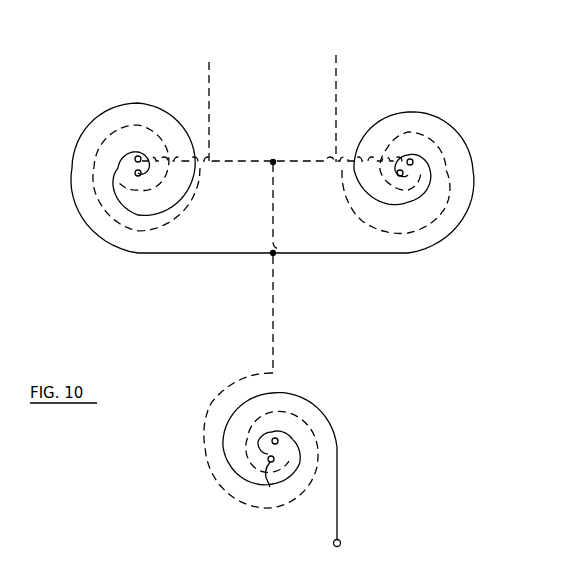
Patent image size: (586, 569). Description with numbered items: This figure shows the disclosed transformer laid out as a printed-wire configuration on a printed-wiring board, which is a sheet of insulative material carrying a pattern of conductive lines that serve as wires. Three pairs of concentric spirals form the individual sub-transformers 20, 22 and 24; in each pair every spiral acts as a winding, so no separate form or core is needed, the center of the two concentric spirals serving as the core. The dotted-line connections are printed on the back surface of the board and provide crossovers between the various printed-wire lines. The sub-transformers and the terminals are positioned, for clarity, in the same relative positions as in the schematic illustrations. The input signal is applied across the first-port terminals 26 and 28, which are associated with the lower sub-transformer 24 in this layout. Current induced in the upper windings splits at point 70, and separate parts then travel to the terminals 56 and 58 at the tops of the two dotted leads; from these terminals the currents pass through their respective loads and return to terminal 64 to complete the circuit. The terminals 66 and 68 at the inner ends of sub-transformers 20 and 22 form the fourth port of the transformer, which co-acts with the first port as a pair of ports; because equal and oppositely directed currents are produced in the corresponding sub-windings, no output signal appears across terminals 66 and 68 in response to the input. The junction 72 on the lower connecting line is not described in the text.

The sub-transformer 20 is at (139, 96).
The sub-transformer 22 is at (464, 126).
The sub-transformer 24 is at (217, 390).
The terminal 26 is at (270, 487).
The terminal 28 is at (333, 543).
The terminal 56 is at (209, 54).
The terminal 58 is at (337, 47).
The terminal 64 is at (275, 440).
The terminal 66 is at (139, 190).
The terminal 68 is at (401, 193).
The point 70 is at (273, 158).
The junction 72 is at (271, 254).